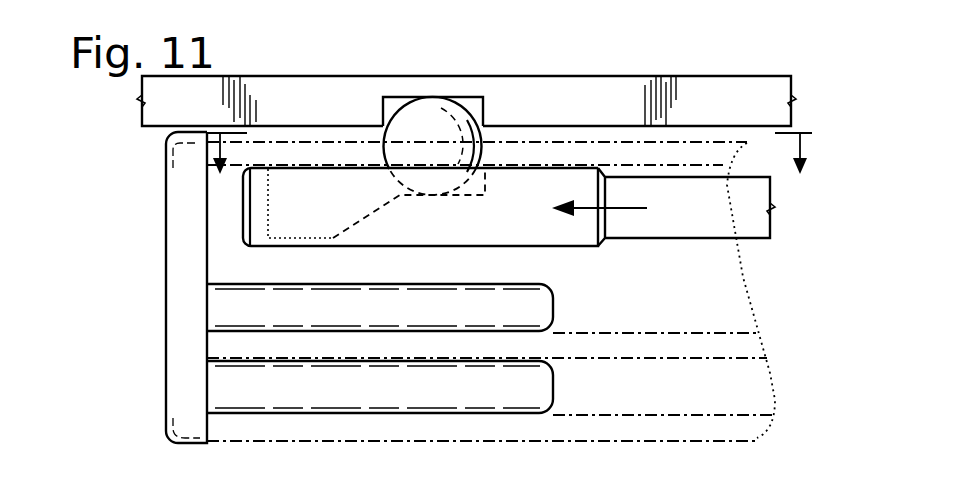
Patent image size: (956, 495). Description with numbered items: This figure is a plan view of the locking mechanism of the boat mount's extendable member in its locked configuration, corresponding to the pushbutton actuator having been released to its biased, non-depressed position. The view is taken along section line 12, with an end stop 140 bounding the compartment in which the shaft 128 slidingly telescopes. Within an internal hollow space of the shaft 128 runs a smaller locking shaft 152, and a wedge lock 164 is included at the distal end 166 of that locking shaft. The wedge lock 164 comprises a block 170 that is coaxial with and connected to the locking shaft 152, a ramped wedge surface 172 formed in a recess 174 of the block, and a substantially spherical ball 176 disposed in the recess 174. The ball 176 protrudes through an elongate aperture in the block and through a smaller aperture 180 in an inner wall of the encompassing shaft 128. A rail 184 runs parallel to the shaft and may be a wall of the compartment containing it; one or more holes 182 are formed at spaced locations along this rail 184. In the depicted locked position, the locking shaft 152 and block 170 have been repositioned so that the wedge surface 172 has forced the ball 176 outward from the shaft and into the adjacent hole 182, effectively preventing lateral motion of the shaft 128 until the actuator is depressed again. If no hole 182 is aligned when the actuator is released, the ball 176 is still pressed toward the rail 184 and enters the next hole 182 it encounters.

The section line 12- 12 is at (511, 170).
The shaft 128 is at (522, 438).
The end stop 140 is at (180, 345).
The locking shaft 152 is at (752, 225).
The wedge lock 164 is at (91, 223).
The distal end 166 is at (238, 223).
The block 170 is at (545, 232).
The ramped wedge surface 172 is at (390, 219).
The recess 174 is at (353, 216).
The ball 176 is at (447, 136).
The aperture 180 is at (484, 158).
The hole 182 is at (402, 101).
The rail 184 is at (605, 96).